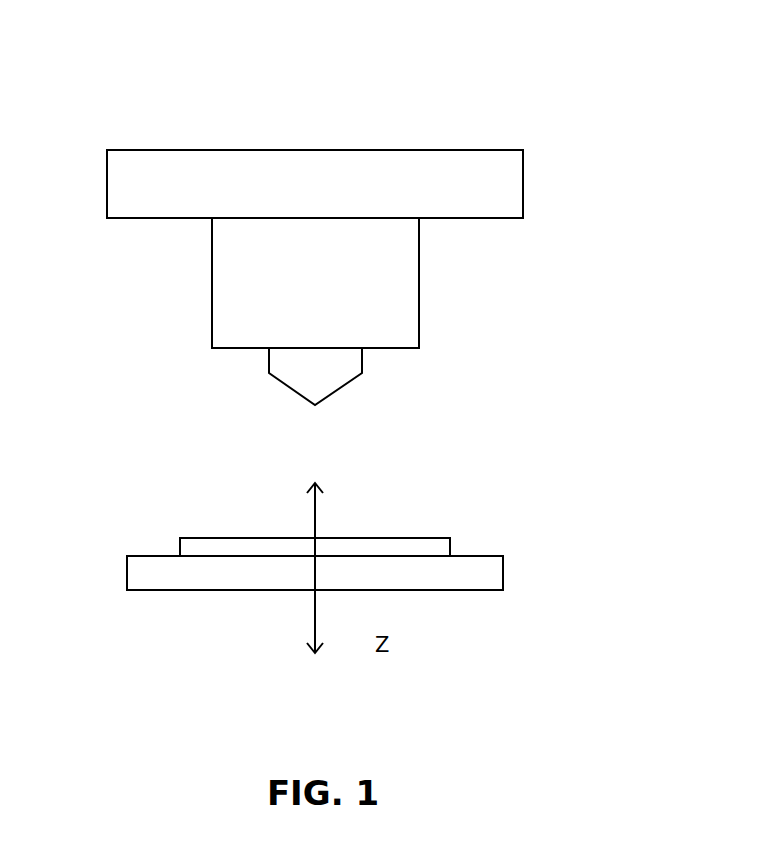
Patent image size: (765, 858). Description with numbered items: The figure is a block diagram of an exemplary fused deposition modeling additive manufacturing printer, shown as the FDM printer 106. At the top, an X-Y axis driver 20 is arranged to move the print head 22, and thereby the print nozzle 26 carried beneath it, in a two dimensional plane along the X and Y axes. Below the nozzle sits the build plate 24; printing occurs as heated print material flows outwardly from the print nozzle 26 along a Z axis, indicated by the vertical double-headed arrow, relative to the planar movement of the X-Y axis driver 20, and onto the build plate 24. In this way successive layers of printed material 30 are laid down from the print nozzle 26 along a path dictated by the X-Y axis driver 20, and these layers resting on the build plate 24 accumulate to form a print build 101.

The FDM printer 106 is at (707, 38).
The X-Y axis driver 20 is at (523, 183).
The print head 22 is at (302, 297).
The print nozzle 26 is at (362, 373).
The layers of printed material 30 is at (180, 548).
The print build 101 is at (430, 538).
The build plate 24 is at (503, 575).